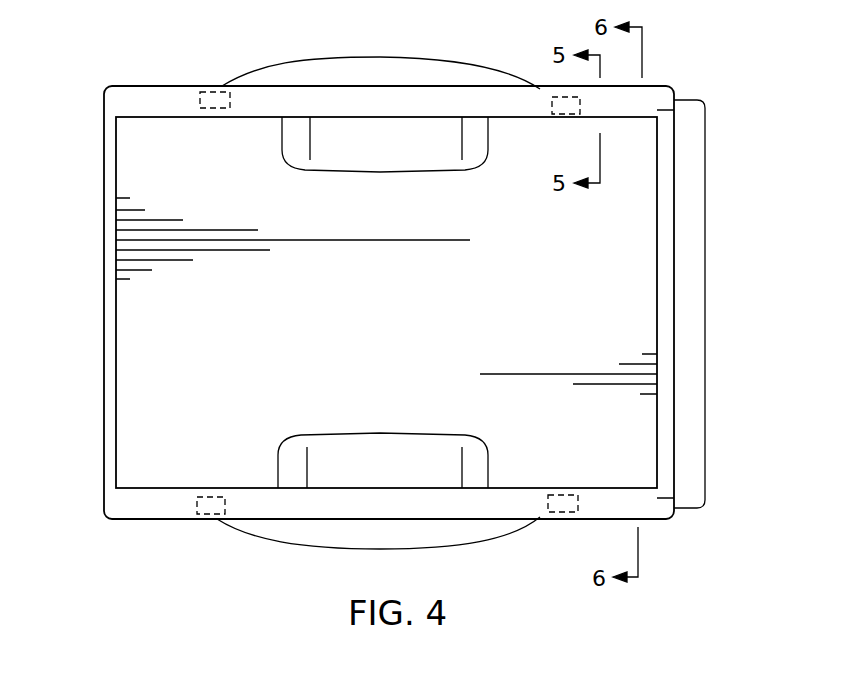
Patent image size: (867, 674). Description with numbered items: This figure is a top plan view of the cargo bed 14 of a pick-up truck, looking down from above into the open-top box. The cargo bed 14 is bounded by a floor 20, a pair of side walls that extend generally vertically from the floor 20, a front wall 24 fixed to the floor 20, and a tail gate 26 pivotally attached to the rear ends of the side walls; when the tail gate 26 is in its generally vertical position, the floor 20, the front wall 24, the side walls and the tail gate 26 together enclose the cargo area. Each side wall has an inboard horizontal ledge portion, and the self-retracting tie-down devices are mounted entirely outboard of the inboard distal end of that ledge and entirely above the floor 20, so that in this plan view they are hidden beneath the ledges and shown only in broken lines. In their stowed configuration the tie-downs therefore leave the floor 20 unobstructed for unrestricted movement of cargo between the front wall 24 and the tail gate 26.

The cargo bed 14 is at (106, 143).
The floor 20 is at (397, 317).
The front wall 24 is at (108, 326).
The tail gate 26 is at (667, 233).